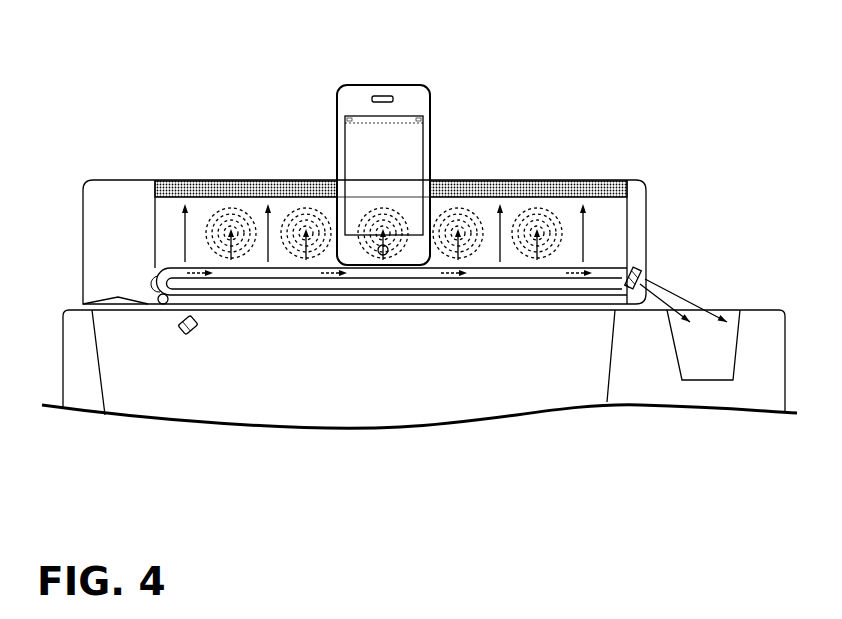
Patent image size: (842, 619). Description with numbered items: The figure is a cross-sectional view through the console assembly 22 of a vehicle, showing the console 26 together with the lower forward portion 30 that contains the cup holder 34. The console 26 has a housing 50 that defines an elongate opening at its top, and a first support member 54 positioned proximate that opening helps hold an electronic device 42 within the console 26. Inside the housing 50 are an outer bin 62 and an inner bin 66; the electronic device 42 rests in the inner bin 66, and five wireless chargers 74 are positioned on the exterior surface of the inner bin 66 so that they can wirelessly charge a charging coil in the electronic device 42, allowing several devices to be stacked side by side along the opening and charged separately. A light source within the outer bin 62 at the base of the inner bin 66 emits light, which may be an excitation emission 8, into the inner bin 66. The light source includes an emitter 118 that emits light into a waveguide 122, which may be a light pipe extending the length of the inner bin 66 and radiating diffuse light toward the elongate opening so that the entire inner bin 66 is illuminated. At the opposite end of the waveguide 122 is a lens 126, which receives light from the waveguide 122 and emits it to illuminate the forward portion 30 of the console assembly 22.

The console assembly 22 is at (718, 93).
The console 26 is at (556, 158).
The forward portion 30 is at (768, 306).
The cup holder 34 is at (700, 362).
The electronic device 42 is at (403, 92).
The housing 50 is at (634, 199).
The first support member 54 is at (504, 180).
The outer bin 62 is at (478, 285).
The inner bin 66 is at (606, 222).
The wireless charger 74 is at (300, 214).
The excitation emission 8 is at (185, 232).
The emitter 118 is at (178, 337).
The waveguide 122 is at (153, 274).
The lens 126 is at (642, 270).